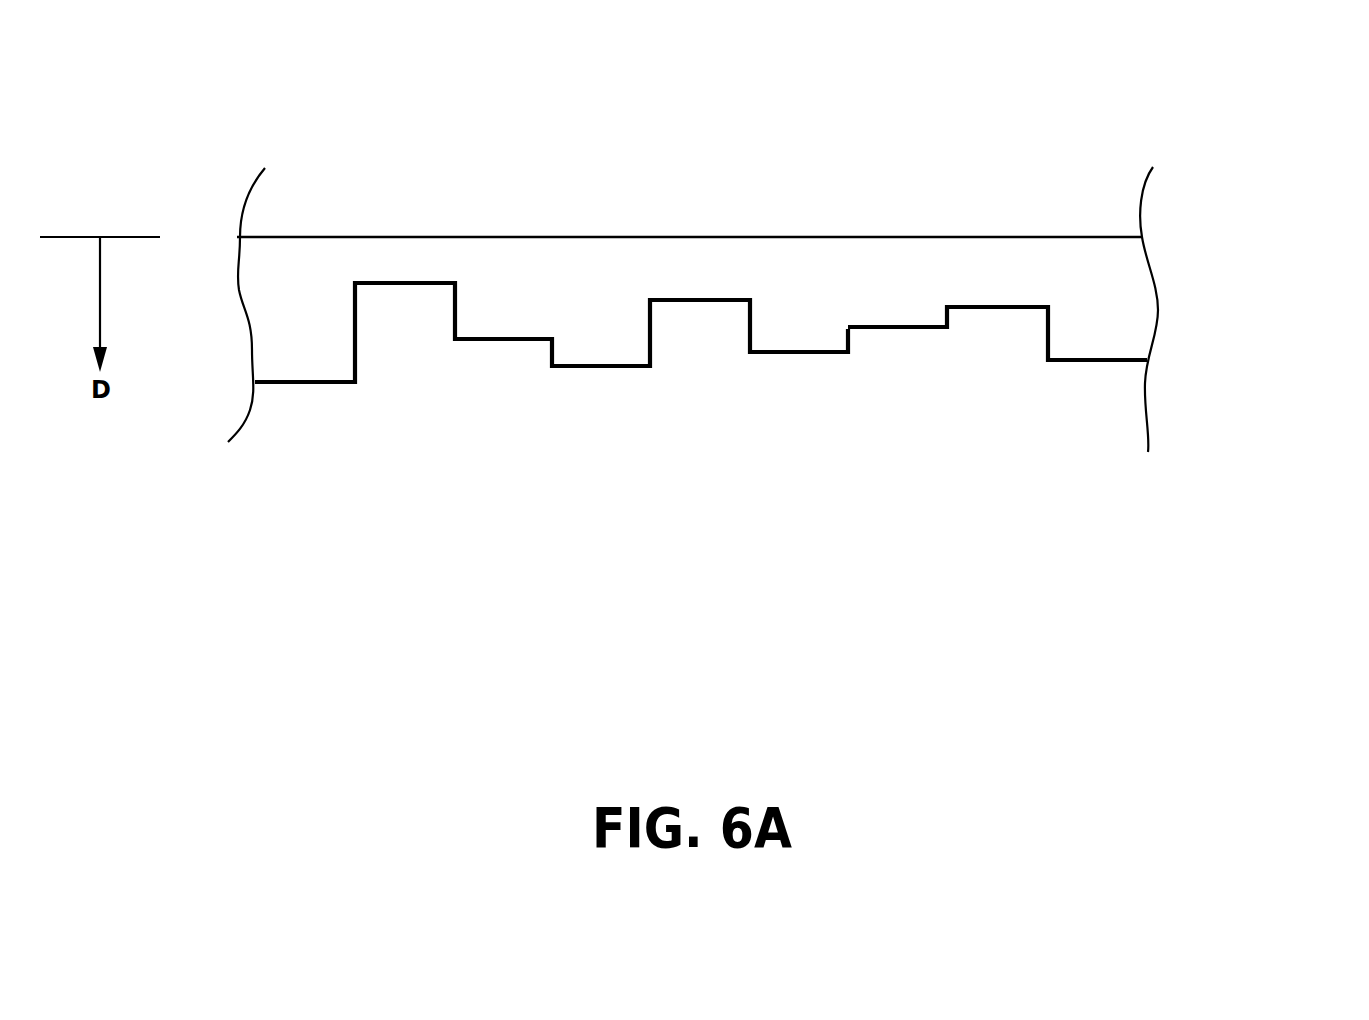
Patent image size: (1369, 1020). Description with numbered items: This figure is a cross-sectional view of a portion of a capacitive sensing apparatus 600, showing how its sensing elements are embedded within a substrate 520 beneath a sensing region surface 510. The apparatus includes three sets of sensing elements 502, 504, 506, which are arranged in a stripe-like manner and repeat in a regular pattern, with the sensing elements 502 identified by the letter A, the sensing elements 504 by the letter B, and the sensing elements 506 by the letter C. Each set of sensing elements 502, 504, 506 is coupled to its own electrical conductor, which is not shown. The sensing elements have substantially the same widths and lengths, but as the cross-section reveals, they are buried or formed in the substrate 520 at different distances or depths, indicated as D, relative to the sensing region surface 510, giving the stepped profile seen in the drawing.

The capacitive sensing apparatus 600 is at (236, 89).
The sensing region surface 510 is at (963, 236).
The substrate 520 is at (1122, 308).
The sensing elements 502 is at (328, 388).
The sensing elements 504 is at (418, 290).
The sensing elements 506 is at (515, 347).